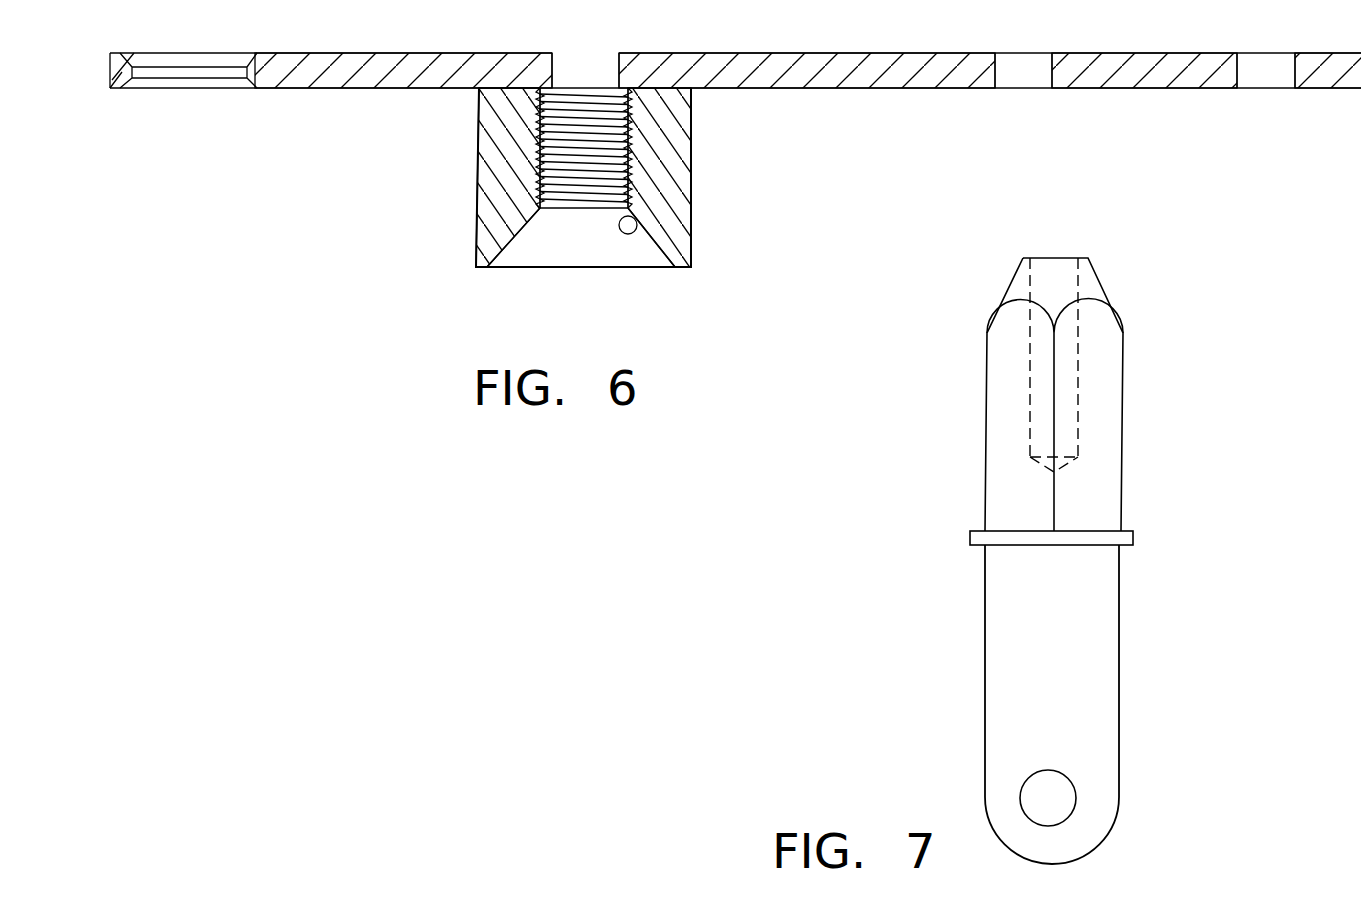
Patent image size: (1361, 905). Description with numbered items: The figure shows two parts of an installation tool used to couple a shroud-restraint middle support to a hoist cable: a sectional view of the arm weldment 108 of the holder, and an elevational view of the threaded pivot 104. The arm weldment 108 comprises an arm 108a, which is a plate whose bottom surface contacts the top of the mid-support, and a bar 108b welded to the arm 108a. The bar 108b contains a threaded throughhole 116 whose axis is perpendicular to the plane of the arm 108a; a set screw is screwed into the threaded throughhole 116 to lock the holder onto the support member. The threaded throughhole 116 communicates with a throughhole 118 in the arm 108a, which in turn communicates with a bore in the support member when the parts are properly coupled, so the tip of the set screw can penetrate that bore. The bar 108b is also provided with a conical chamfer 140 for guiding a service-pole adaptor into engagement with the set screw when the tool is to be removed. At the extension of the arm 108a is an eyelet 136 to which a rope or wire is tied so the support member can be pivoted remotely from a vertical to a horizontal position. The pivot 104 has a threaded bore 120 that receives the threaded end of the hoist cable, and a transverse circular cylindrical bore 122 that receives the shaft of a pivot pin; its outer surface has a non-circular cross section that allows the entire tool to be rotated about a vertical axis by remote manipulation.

In FIG. 7, the threaded pivot 104 is at (1109, 561).
In FIG. 6, the arm weldment 108 is at (558, 200).
In FIG. 6, the arm 108a is at (845, 90).
In FIG. 6, the bar 108b is at (692, 178).
In FIG. 6, the threaded throughhole 116 is at (562, 209).
In FIG. 6, the throughhole 118 is at (583, 72).
In FIG. 7, the threaded bore 120 is at (1078, 292).
In FIG. 7, the transverse circular cylindrical bore 122 is at (1068, 778).
In FIG. 6, the eyelet 136 is at (127, 88).
In FIG. 6, the conical chamfer 140 is at (657, 245).